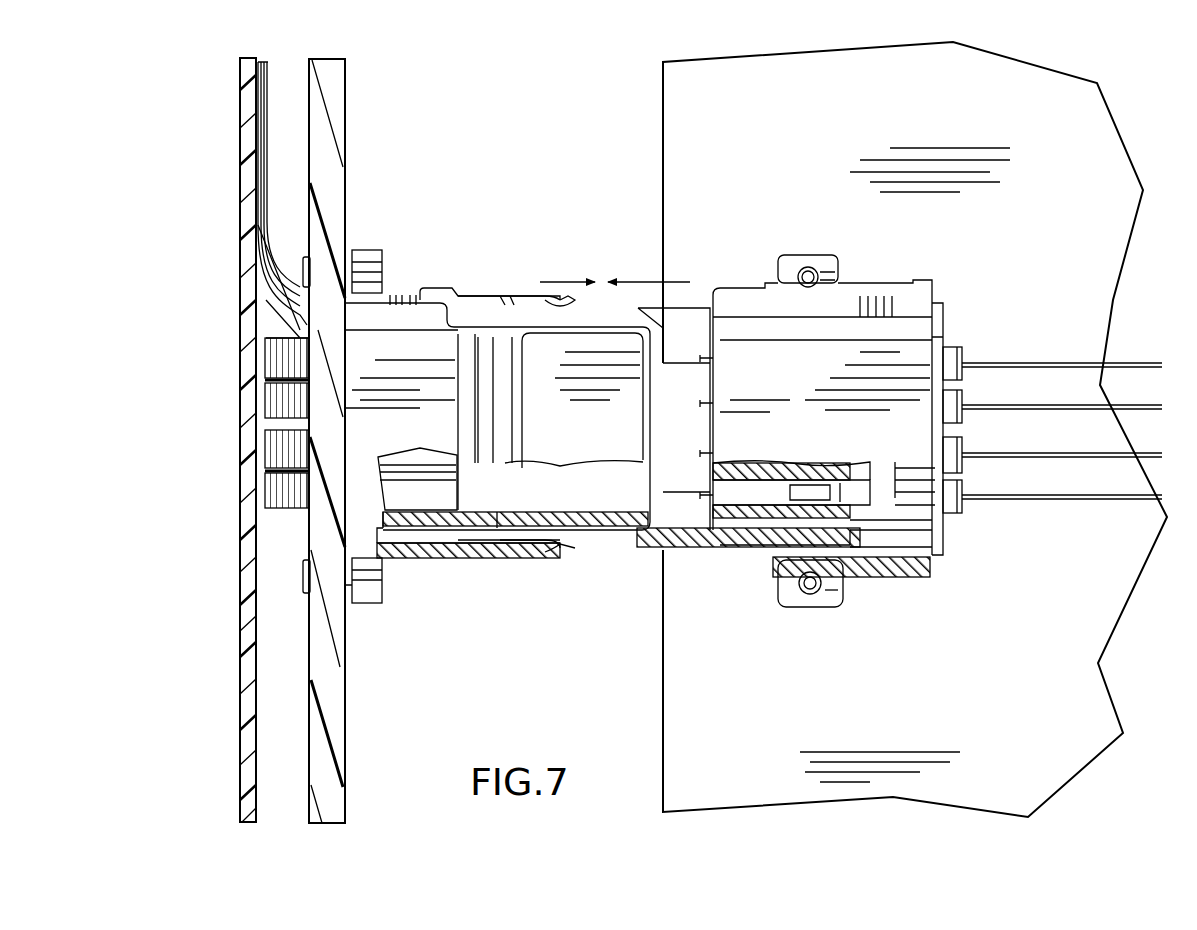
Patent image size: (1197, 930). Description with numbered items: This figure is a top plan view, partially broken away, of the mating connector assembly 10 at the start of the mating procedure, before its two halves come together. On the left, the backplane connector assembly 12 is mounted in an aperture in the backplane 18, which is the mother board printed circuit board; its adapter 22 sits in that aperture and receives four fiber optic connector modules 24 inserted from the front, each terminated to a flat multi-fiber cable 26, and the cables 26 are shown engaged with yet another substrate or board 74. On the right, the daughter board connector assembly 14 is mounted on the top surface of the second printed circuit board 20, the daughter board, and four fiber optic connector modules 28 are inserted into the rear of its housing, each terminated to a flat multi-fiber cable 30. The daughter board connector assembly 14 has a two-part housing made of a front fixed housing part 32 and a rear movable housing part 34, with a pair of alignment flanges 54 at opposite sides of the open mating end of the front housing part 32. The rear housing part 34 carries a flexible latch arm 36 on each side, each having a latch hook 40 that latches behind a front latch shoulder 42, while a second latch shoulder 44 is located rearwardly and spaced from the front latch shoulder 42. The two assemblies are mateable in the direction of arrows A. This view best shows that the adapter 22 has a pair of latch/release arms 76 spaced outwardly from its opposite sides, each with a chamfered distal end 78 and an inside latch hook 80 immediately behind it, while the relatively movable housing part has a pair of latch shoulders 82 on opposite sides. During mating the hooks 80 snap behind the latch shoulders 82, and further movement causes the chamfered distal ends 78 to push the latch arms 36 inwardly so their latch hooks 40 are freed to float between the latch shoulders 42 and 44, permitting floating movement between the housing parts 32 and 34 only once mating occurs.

The mating connector assembly 10 is at (492, 163).
The backplane connector assembly 12 is at (430, 280).
The daughter board connector assembly 14 is at (885, 282).
The backplane 18 is at (335, 108).
The second printed circuit board 20 is at (1105, 145).
The adapter 22 is at (423, 540).
The fiber optic connector modules 24 is at (262, 400).
The multi-fiber cable 26 is at (268, 290).
The fiber optic connector modules 28 is at (965, 395).
The multi-fiber cable 30 is at (1100, 405).
The front fixed housing part 32 is at (890, 330).
The rear movable housing part 34 is at (905, 575).
The flexible latch arm 36 is at (848, 580).
The latch hook 40 is at (785, 565).
The front latch shoulder 42 is at (815, 605).
The second latch shoulder 44 is at (865, 580).
The alignment flanges 54 is at (703, 310).
The substrate or board 74 is at (248, 98).
The latch/release arms 76 is at (470, 297).
The chamfered distal ends 78 is at (565, 300).
The inside latch hooks 80 is at (515, 297).
The latch shoulders 82 is at (770, 550).
The mating direction arrows A is at (615, 280).